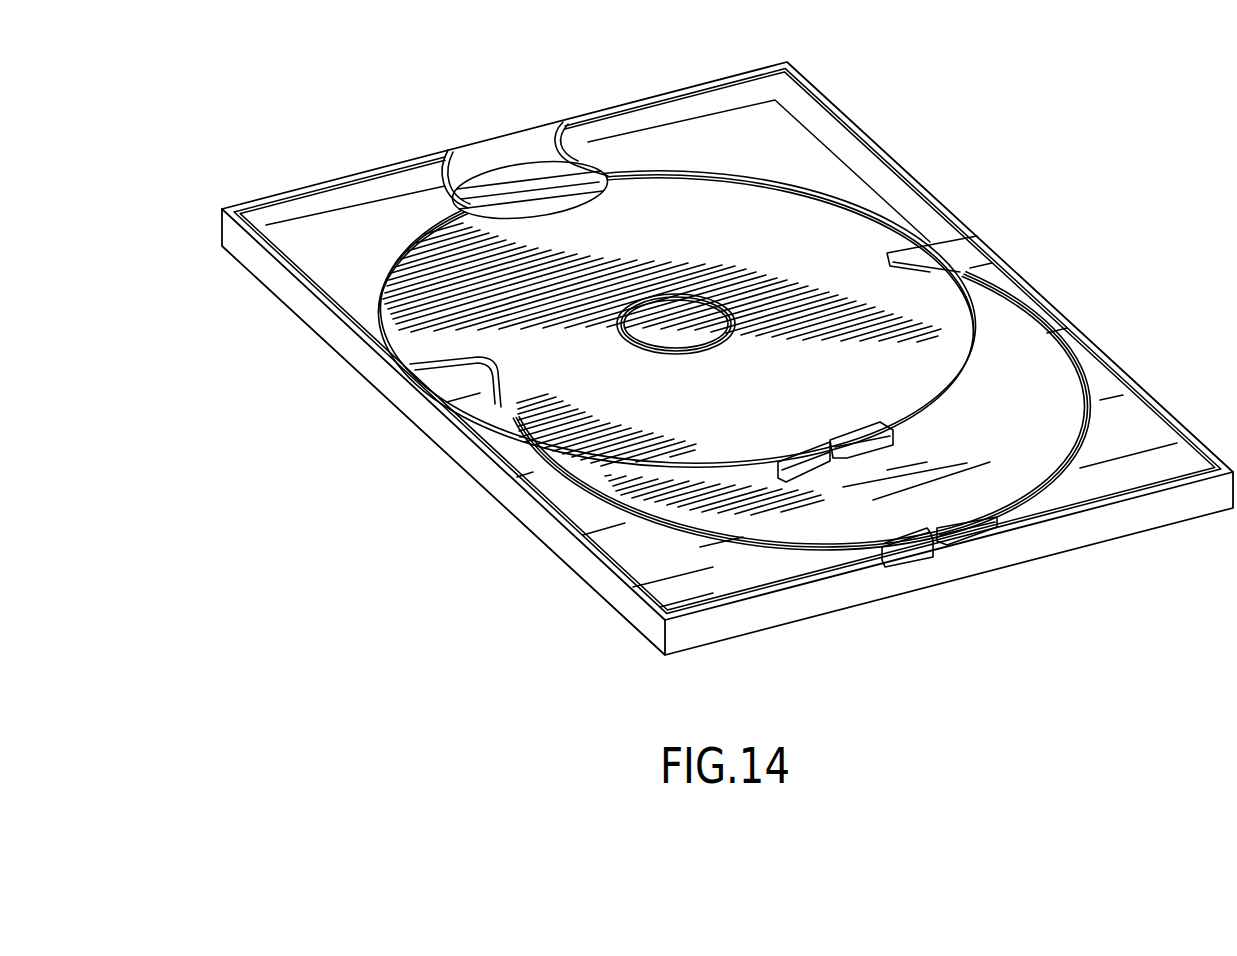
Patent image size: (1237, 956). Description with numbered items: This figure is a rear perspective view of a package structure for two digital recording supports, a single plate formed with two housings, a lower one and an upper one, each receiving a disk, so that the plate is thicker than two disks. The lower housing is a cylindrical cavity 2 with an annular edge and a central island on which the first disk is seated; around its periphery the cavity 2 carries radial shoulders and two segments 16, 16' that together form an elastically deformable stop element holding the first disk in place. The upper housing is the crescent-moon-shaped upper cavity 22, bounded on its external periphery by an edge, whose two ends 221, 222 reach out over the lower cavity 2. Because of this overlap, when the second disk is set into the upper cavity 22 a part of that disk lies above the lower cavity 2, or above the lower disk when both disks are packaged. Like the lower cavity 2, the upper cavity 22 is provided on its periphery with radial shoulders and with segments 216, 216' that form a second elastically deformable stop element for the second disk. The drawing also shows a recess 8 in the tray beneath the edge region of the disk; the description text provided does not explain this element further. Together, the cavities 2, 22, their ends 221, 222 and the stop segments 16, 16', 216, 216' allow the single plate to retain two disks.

The cavity 2 is at (705, 203).
The finger recess 8 is at (513, 180).
The segment 16 is at (931, 436).
The segment 16' is at (786, 567).
The upper cavity 22 is at (683, 510).
The segment 216 is at (1007, 586).
The segment 216' is at (939, 620).
The end of upper cavity 221 is at (970, 232).
The end of upper cavity 222 is at (478, 370).